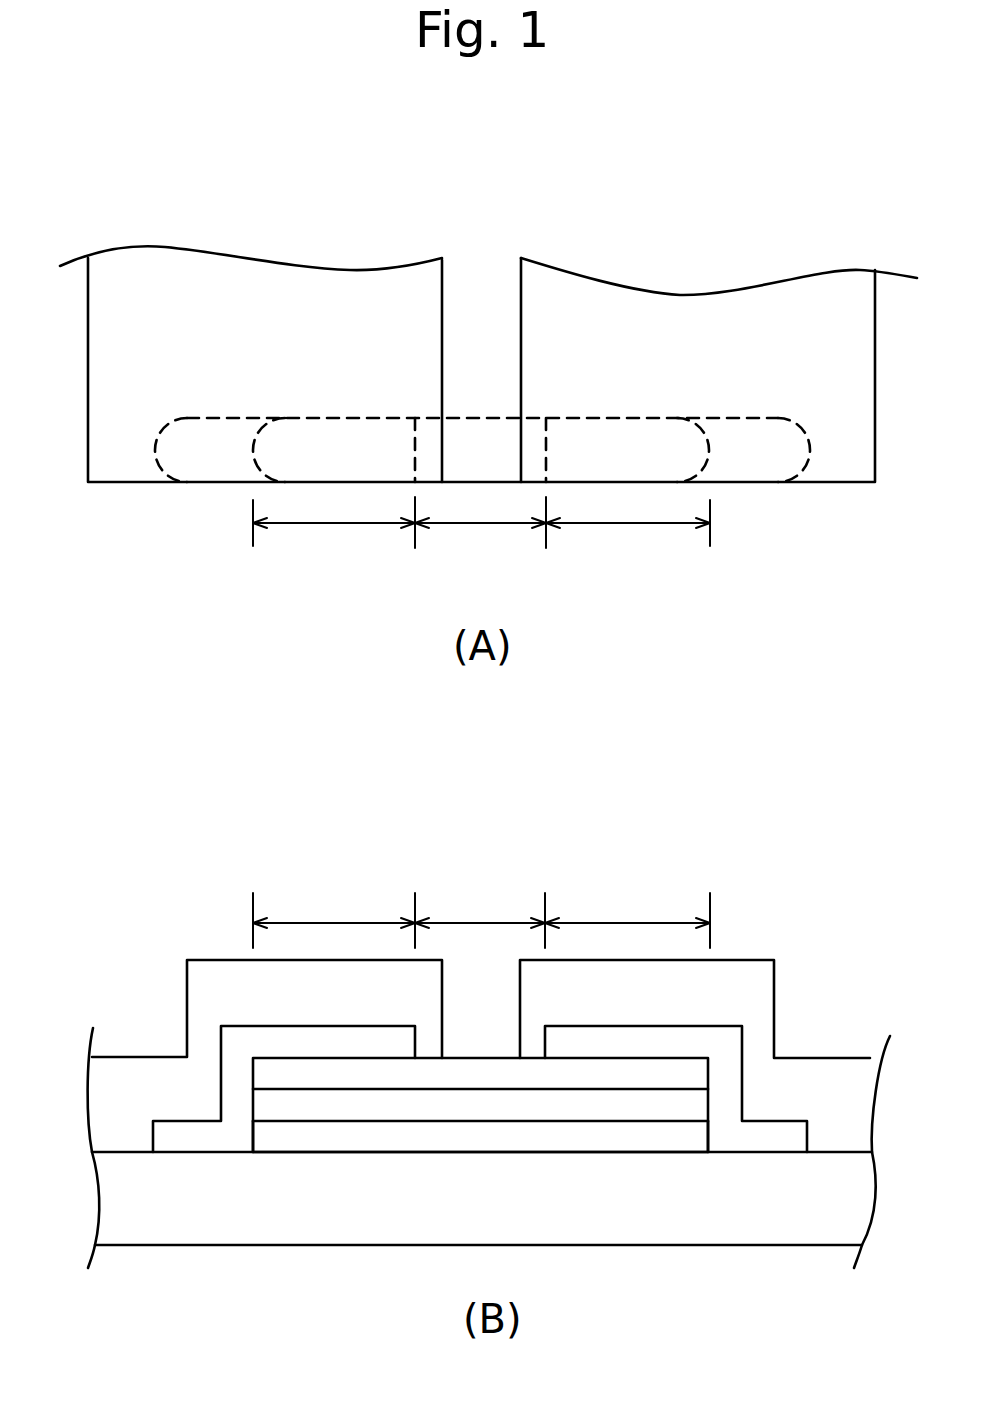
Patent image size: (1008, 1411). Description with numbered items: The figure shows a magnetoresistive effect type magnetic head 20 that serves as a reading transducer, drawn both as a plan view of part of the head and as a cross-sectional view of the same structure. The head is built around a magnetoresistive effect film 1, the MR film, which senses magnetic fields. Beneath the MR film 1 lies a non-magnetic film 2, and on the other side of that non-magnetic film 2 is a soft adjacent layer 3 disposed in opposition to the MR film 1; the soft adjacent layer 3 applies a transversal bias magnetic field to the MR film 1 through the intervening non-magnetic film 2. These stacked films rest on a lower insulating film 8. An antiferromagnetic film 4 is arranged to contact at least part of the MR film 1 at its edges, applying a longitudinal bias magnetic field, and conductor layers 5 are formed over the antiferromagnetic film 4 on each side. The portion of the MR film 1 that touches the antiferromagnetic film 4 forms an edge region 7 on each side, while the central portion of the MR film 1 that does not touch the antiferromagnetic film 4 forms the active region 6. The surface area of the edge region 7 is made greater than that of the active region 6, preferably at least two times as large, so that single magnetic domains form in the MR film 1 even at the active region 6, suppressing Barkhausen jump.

The magnetic head 20 is at (472, 176).
The magnetoresistive effect film 1 is at (277, 477).
The non-magnetic film 2 is at (498, 1105).
The soft adjacent layer 3 is at (632, 1138).
The antiferromagnetic film 4 is at (183, 478).
The upper electrode / conductor layer 5 is at (289, 290).
The active region 6 is at (478, 527).
The edge region 7 is at (334, 527).
The lower insulating film 8 is at (489, 1148).